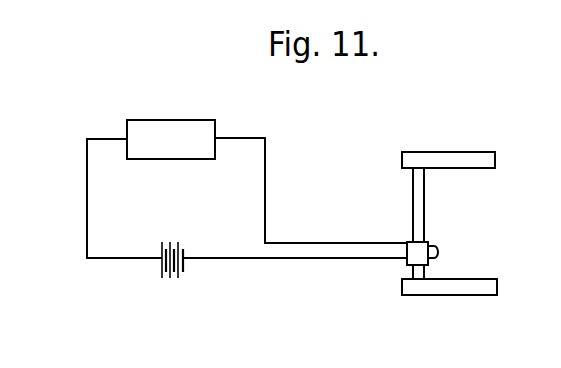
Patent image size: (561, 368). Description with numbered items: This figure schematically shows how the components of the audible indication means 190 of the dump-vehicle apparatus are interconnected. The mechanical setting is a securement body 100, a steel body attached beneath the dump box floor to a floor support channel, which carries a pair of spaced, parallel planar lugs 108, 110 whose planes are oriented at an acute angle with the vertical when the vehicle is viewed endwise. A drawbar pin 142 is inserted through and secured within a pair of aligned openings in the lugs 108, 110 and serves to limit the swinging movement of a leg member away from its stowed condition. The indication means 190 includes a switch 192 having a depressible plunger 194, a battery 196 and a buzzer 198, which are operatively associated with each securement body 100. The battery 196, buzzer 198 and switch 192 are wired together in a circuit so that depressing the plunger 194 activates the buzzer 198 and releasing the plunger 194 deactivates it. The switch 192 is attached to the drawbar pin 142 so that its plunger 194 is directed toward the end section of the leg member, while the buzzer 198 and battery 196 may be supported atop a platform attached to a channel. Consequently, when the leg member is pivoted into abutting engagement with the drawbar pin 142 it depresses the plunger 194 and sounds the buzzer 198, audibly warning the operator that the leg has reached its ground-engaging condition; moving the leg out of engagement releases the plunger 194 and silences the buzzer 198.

The securement body 100 is at (472, 152).
The planar lug 108 is at (465, 292).
The planar lug 110 is at (450, 152).
The drawbar pin 142 is at (425, 200).
The audible indication means 190 is at (138, 292).
The switch 192 is at (418, 240).
The depressible plunger 194 is at (440, 252).
The battery 196 is at (184, 266).
The buzzer 198 is at (152, 120).